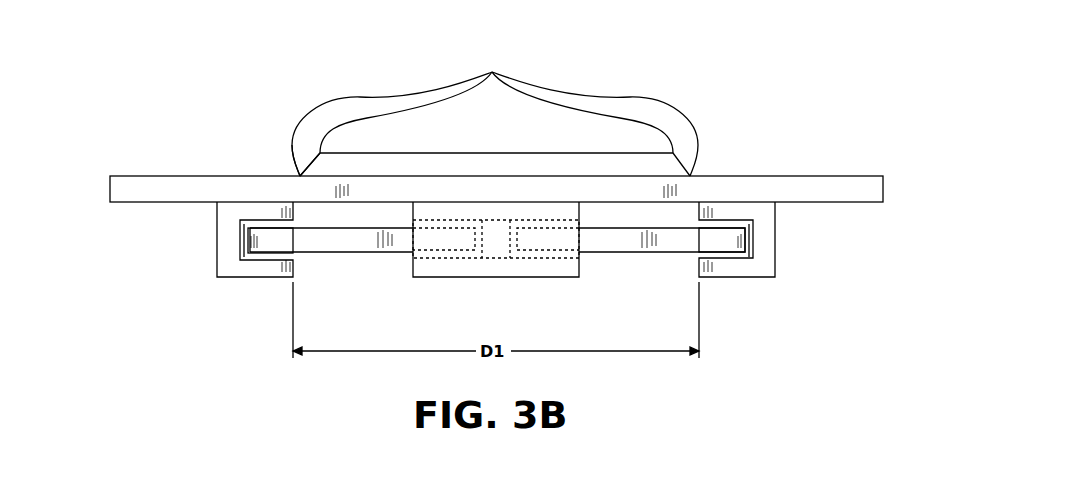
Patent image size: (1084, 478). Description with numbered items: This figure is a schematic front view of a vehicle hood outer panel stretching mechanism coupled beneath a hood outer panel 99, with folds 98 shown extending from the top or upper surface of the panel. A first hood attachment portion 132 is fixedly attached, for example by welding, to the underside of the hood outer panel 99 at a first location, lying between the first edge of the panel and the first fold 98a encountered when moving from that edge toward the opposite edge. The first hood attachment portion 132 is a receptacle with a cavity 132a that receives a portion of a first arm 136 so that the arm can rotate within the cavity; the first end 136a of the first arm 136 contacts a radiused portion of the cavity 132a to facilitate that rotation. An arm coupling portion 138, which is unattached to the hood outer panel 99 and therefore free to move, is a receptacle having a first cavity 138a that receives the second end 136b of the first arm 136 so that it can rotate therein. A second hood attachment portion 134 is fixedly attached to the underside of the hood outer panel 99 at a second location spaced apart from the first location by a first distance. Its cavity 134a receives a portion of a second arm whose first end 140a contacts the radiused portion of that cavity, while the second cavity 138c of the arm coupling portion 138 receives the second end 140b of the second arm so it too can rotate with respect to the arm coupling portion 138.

The folds 98 is at (495, 112).
The first fold 98a is at (300, 176).
The hood outer panel 99 is at (110, 190).
The first hood attachment portion 132 is at (217, 231).
The cavity 132a is at (257, 253).
The second hood attachment portion 134 is at (715, 278).
The cavity 134a is at (753, 233).
The first arm 136 is at (385, 228).
The first end 136a is at (277, 236).
The second end 136b is at (445, 243).
The arm coupling portion 138 is at (475, 278).
The first cavity 138a is at (422, 262).
The second cavity 138c is at (567, 246).
The first end 140a is at (715, 235).
The second end 140b is at (577, 260).